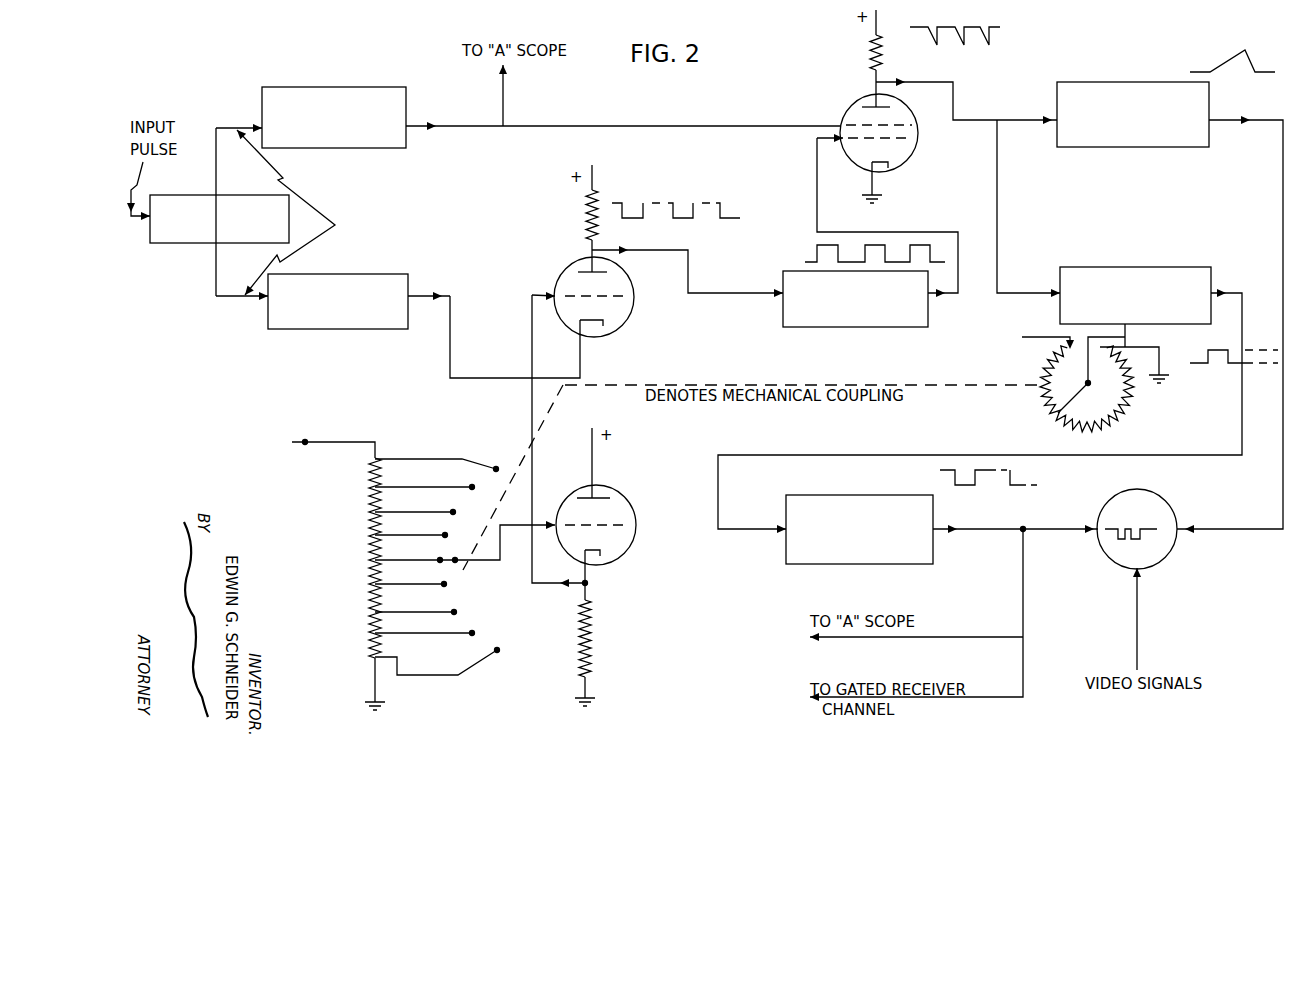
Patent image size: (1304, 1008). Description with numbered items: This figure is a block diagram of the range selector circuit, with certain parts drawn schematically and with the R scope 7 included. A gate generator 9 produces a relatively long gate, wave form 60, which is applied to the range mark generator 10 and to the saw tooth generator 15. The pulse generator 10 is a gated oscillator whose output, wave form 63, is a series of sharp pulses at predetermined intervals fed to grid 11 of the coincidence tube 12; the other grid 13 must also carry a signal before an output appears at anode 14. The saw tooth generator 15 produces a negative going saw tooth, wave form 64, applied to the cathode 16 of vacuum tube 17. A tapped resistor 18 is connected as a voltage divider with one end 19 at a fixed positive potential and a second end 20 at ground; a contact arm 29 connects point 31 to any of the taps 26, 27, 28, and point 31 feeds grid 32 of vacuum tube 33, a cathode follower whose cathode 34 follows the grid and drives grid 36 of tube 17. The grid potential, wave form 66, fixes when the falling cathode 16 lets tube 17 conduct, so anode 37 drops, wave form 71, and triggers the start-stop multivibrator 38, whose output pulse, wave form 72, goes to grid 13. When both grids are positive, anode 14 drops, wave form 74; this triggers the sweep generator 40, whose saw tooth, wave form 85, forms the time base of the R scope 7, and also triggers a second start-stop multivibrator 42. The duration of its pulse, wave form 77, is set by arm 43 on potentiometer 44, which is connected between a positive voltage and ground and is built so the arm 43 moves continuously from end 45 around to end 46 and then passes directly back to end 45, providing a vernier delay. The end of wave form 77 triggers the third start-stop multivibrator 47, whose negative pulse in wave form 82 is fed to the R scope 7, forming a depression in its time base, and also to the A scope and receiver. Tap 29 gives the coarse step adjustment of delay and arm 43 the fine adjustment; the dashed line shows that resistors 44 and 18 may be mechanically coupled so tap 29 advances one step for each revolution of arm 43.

The R scope 7 is at (1174, 556).
The gate generator 9 is at (175, 243).
The range mark generator 10 is at (370, 148).
The grid 11 is at (847, 121).
The coincidence tube 12 is at (905, 152).
The grid 13 is at (855, 140).
The anode 14 is at (890, 107).
The saw tooth generator 15 is at (360, 329).
The cathode 16 is at (583, 360).
The vacuum tube 17 is at (633, 295).
The tapped resistor 18 is at (363, 489).
The end of resistor 19 is at (305, 440).
The second end of resistor 20 is at (375, 662).
The tap 26 is at (437, 559).
The tap 27 is at (446, 584).
The tap 28 is at (456, 612).
The contact arm 29 is at (455, 558).
The point 31 is at (512, 560).
The grid 32 is at (573, 528).
The vacuum tube 33 is at (632, 505).
The cathode 34 is at (598, 556).
The grid 36 is at (608, 300).
The anode 37 is at (605, 272).
The multivibrator 38 is at (857, 327).
The sweep generator 40 is at (1138, 82).
The second start-stop multivibrator 42 is at (1133, 267).
The arm 43 is at (1075, 392).
The potentiometer 44 is at (1110, 422).
The end 45 is at (1103, 346).
The end 46 is at (1071, 356).
The third start-stop multivibrator 47 is at (860, 495).
The wave form 60 is at (287, 212).
The wave form 63 is at (473, 130).
The wave form 64 is at (424, 294).
The wave form 66 is at (528, 312).
The wave form 71 is at (662, 252).
The wave form 72 is at (958, 272).
The wave form 74 is at (944, 82).
The wave form 77 is at (1258, 322).
The wave form 82 is at (991, 528).
The wave form 85 is at (1230, 118).